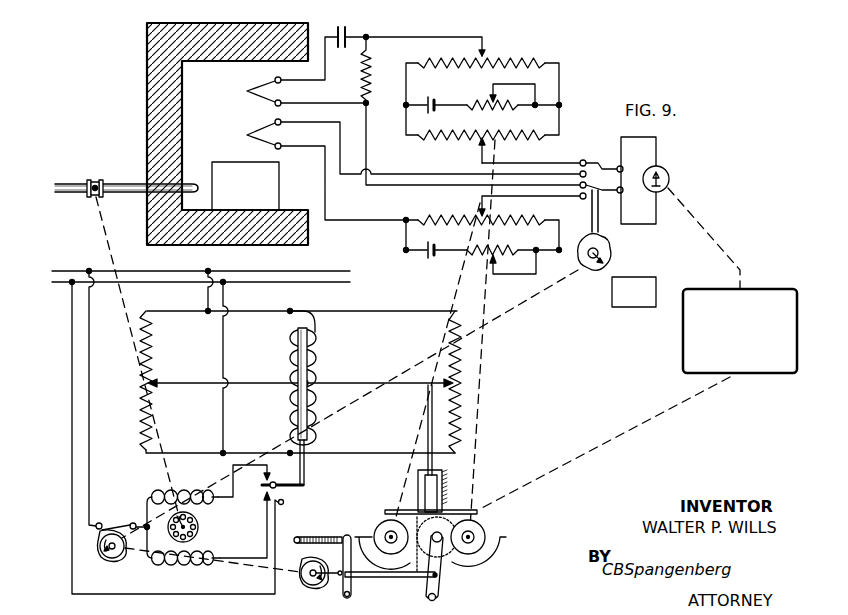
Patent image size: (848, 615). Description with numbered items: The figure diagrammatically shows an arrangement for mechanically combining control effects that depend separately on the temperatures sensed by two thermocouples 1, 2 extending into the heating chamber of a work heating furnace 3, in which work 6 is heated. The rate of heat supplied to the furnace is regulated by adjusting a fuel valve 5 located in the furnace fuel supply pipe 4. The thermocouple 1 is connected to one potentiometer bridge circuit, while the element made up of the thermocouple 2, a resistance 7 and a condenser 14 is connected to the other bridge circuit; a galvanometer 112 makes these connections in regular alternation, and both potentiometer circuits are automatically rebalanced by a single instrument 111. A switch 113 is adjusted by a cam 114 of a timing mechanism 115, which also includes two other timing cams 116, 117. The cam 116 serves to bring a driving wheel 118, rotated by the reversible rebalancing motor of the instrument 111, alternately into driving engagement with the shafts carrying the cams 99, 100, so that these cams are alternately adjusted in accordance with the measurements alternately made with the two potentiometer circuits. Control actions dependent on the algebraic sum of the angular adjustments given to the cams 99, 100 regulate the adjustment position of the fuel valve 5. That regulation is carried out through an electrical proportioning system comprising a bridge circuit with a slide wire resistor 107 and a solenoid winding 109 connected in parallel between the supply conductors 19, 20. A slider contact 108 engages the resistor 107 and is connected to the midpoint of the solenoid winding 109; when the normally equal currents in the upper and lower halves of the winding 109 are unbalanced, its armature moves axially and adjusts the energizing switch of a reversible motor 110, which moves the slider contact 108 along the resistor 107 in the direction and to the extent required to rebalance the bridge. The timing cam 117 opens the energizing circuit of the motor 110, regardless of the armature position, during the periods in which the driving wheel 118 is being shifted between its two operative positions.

The thermocouple 1 is at (249, 130).
The thermocouple 2 is at (249, 86).
The work heating furnace 3 is at (147, 101).
The furnace fuel supply pipe 4 is at (134, 184).
The fuel valve 5 is at (92, 180).
The work 6 is at (228, 165).
The resistance 7 is at (371, 76).
The condenser 14 is at (341, 27).
The supply conductor 19 is at (300, 271).
The supply conductor 20 is at (310, 284).
The cam 99 is at (366, 531).
The cam 100 is at (504, 543).
The slide wire resistor 107 is at (151, 350).
The slider contact 108 is at (151, 378).
The solenoid winding 109 is at (316, 368).
The reversible motor 110 is at (210, 527).
The instrument 111 is at (690, 338).
The galvanometer 112 is at (667, 174).
The switch 113 is at (598, 160).
The cam 114 is at (610, 256).
The timing mechanism 115 is at (620, 292).
The timing cam 116 is at (305, 586).
The timing cam 117 is at (112, 558).
The driving wheel 118 is at (447, 557).